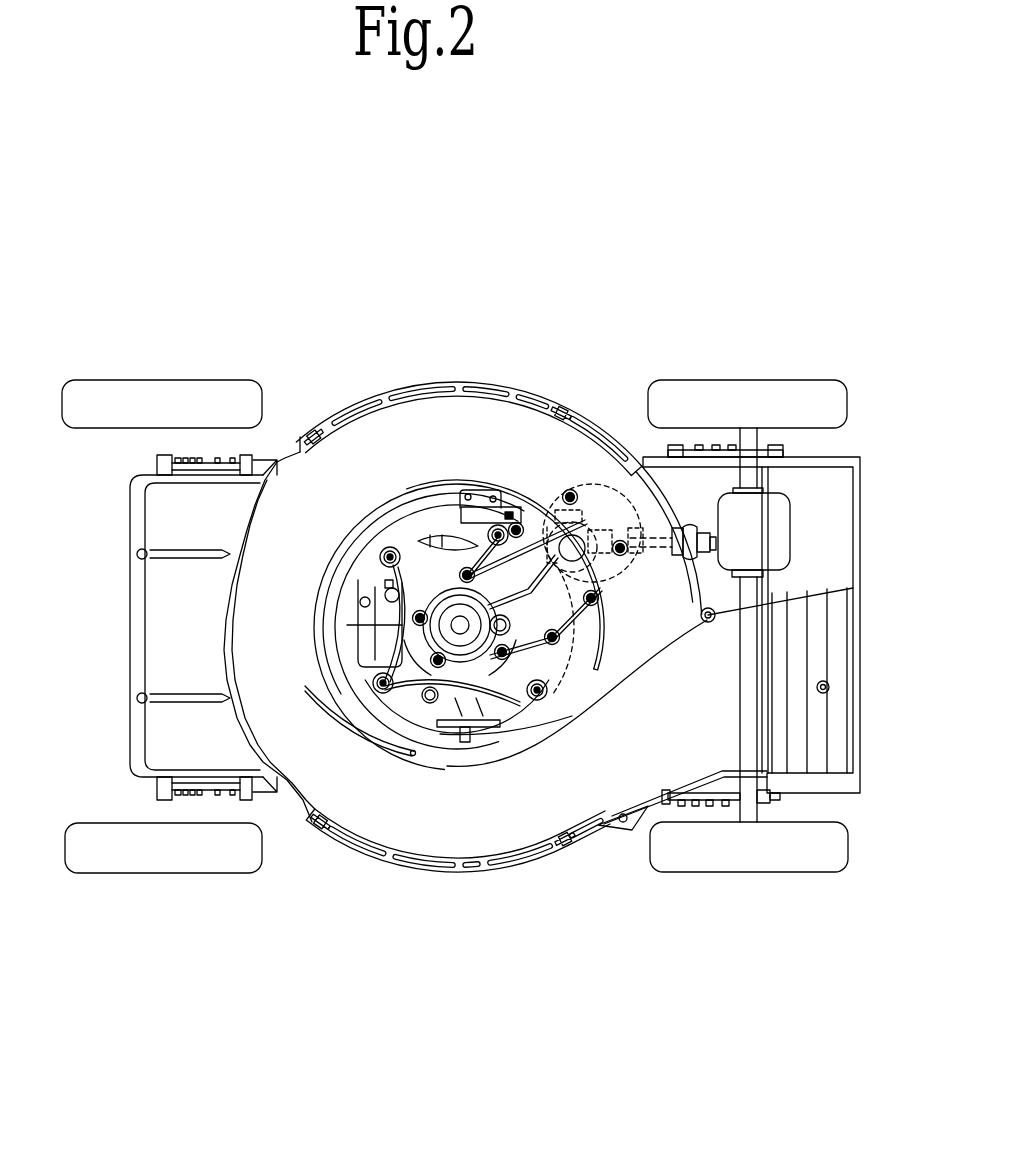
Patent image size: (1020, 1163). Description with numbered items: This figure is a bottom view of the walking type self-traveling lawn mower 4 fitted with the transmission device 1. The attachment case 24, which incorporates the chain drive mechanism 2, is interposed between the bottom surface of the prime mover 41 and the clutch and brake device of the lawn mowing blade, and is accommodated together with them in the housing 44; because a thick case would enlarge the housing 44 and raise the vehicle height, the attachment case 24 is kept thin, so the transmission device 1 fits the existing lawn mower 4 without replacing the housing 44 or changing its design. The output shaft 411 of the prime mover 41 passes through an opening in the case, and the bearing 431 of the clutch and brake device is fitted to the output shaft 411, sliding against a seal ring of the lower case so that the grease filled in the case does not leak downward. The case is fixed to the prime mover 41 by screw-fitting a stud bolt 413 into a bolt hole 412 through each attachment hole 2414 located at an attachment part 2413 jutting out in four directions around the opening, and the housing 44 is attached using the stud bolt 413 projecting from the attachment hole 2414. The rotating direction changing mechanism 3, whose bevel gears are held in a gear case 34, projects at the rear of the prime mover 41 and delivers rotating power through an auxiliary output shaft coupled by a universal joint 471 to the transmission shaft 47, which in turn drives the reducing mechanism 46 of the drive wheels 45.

The transmission device 1 is at (458, 535).
The chain drive mechanism 2 is at (508, 553).
The rotating direction changing mechanism 3 is at (581, 514).
The lawn mower 4 is at (326, 403).
The attachment case 24 is at (535, 512).
The gear case 34 is at (556, 518).
The prime mover 41 is at (422, 527).
The housing 44 is at (372, 800).
The drive wheels 45 is at (807, 873).
The reducing mechanism 46 is at (778, 515).
The transmission shaft 47 is at (650, 535).
The output shaft 411 is at (460, 640).
The bolt hole 412 is at (380, 558).
The stud bolt 413 is at (378, 571).
The bearing 431 is at (470, 660).
The universal joint 471 is at (613, 527).
The attachment part 2413 is at (375, 567).
The attachment hole 2414 is at (385, 553).